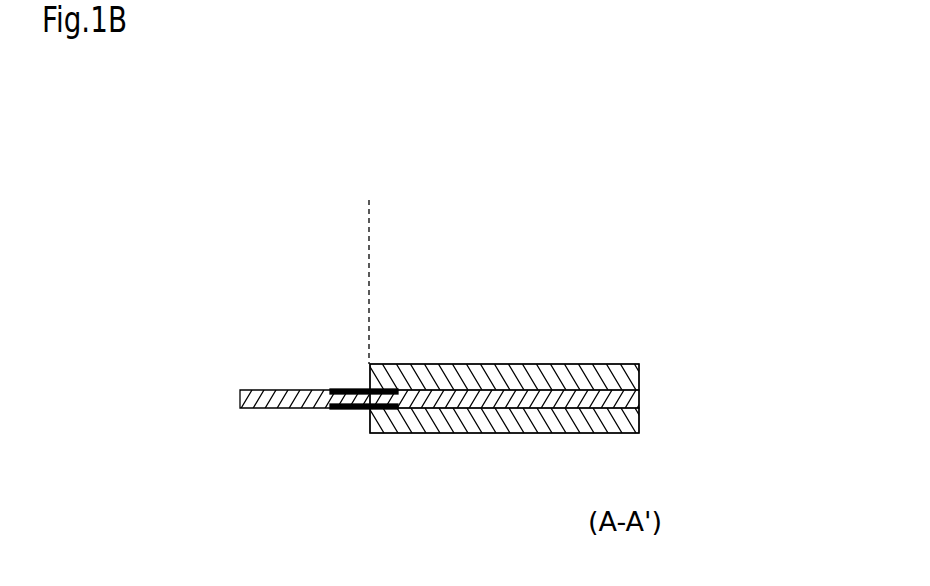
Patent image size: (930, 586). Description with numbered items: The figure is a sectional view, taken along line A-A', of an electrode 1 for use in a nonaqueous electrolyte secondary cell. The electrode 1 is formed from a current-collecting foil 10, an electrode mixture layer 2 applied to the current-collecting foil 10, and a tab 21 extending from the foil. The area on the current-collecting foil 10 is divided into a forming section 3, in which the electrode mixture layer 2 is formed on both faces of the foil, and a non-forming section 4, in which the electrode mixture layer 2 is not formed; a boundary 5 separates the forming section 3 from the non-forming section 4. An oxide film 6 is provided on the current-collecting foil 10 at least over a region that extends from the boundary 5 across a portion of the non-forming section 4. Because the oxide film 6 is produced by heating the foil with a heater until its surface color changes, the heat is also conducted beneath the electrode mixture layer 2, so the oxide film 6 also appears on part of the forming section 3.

The electrode 1 is at (654, 281).
The electrode mixture layer 2 is at (423, 377).
The forming section 3 is at (637, 251).
The non-forming section 4 is at (365, 251).
The boundary 5 is at (371, 235).
The oxide film 6 is at (345, 390).
The current-collecting foil 10 is at (639, 393).
The tab 21 is at (270, 391).